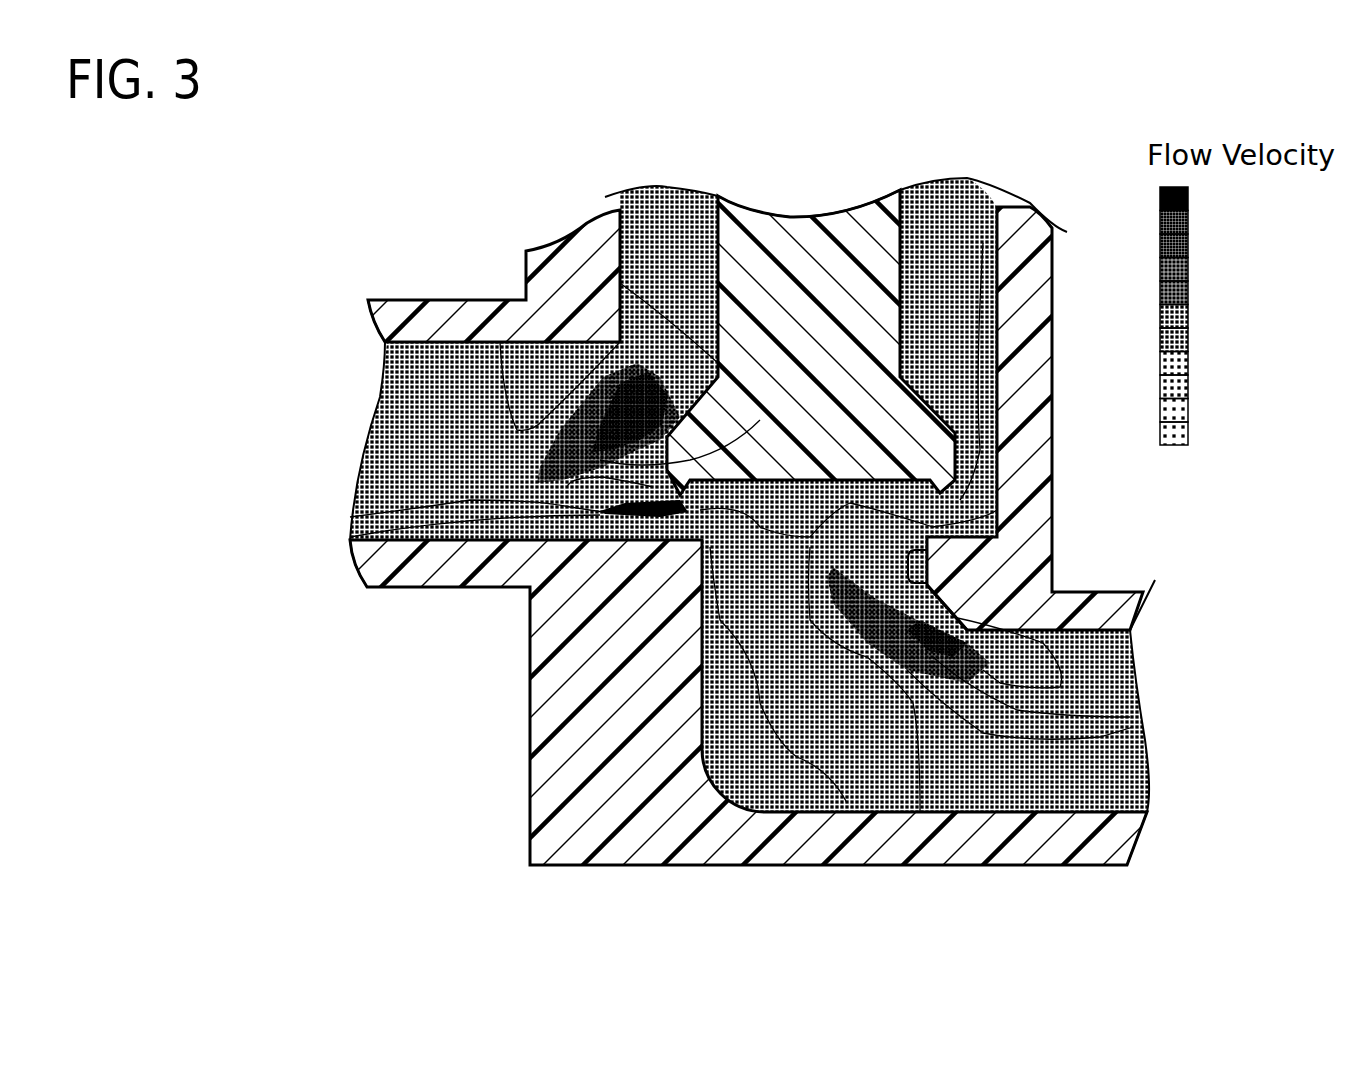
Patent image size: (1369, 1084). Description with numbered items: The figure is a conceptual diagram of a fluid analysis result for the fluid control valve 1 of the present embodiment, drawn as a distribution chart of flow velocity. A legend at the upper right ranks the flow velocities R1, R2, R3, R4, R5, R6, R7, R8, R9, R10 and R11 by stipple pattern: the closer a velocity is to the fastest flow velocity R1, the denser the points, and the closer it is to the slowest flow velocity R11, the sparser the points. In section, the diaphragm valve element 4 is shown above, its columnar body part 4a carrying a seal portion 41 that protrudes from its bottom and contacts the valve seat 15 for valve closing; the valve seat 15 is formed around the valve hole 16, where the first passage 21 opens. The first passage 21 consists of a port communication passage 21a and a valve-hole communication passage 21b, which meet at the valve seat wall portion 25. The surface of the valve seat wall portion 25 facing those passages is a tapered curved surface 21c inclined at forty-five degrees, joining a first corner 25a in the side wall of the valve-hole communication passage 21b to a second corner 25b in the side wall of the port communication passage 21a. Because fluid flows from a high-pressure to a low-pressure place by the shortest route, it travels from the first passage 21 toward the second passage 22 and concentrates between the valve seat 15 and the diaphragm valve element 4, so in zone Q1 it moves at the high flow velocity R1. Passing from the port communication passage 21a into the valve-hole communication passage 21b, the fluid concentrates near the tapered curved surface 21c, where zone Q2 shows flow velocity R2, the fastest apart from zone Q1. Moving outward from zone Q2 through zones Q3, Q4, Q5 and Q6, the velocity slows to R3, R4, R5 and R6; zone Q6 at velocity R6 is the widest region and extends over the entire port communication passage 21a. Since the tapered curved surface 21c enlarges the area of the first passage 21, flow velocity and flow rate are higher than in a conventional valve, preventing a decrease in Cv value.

The fluid control valve 1 is at (357, 202).
The diaphragm valve element 4 is at (661, 322).
The body part 4a is at (760, 225).
The seal portion 41 is at (680, 470).
The valve seat 15 is at (697, 625).
The valve hole 16 is at (700, 548).
The first passage 21 is at (923, 811).
The port communication passage 21a is at (980, 740).
The valve-hole communication passage 21b is at (817, 677).
The tapered curved surface 21c is at (907, 670).
The second passage 22 is at (410, 415).
The valve seat wall portion 25 is at (1025, 421).
The first corner 25a is at (935, 592).
The second corner 25b is at (965, 635).
The zone Q1 is at (640, 515).
The zone Q2 is at (1057, 745).
The zone Q3 is at (1067, 718).
The zone Q4 is at (1067, 685).
The zone Q5 is at (1063, 668).
The zone Q6 is at (1107, 642).
The flow velocity R1 is at (1190, 200).
The flow velocity R2 is at (1190, 224).
The flow velocity R3 is at (1190, 247).
The flow velocity R4 is at (1190, 271).
The flow velocity R5 is at (1190, 294).
The flow velocity R6 is at (1190, 318).
The flow velocity R7 is at (1190, 341).
The flow velocity R8 is at (1190, 365).
The flow velocity R9 is at (1190, 388).
The flow velocity R10 is at (1190, 412).
The flow velocity R11 is at (1190, 435).